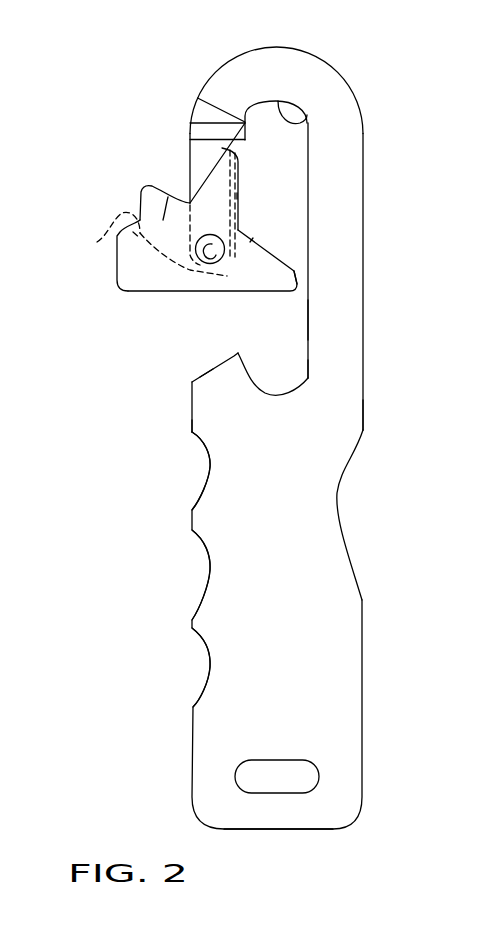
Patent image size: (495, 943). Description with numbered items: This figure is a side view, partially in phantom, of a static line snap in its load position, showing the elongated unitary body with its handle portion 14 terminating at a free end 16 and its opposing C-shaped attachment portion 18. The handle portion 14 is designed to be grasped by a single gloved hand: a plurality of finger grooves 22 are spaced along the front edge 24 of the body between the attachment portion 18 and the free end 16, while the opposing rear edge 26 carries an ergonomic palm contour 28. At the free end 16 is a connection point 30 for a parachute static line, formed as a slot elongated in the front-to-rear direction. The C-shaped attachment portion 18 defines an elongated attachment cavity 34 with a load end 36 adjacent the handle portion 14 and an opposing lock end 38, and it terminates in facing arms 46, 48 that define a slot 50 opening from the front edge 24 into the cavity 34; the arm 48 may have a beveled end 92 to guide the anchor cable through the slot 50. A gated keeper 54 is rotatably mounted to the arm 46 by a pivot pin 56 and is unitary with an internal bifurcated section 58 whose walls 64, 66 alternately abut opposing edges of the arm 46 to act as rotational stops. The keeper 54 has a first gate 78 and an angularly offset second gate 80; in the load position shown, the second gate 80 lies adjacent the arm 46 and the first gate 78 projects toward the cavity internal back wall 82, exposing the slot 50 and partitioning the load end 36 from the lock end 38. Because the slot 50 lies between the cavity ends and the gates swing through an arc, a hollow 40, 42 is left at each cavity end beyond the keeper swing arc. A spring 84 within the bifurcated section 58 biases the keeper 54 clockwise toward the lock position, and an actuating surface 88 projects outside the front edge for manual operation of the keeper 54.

The handle portion 14 is at (305, 688).
The free end 16 is at (278, 830).
The C-shaped attachment portion 18 is at (337, 203).
The finger grooves 22 is at (210, 466).
The front edge 24 is at (190, 432).
The rear edge 26 is at (363, 413).
The palm contour 28 is at (337, 493).
The connection point 30 is at (292, 783).
The attachment cavity 34 is at (288, 254).
The load end 36 is at (308, 378).
The lock end 38 is at (292, 122).
The load end hollow 40 is at (283, 362).
The lock end hollow 42 is at (268, 133).
The arm 46 is at (199, 165).
The arm 48 is at (213, 380).
The slot 50 is at (210, 333).
The gated keeper 54 is at (237, 273).
The pivot pin 56 is at (197, 262).
The bifurcated section 58 is at (143, 187).
The wall 64 is at (253, 238).
The wall 66 is at (97, 242).
The first gate 78 is at (298, 280).
The second gate 80 is at (202, 165).
The cavity internal back wall 82 is at (308, 330).
The spring 84 is at (237, 193).
The actuating surface 88 is at (118, 273).
The beveled end 92 is at (213, 362).